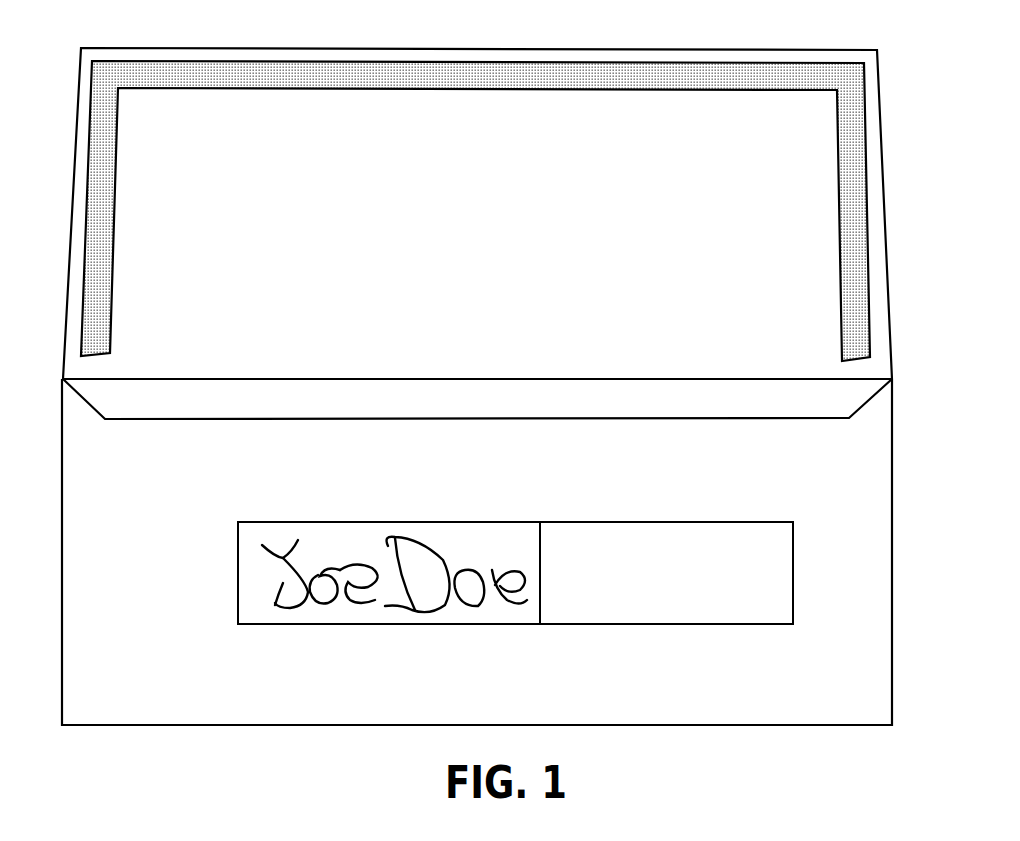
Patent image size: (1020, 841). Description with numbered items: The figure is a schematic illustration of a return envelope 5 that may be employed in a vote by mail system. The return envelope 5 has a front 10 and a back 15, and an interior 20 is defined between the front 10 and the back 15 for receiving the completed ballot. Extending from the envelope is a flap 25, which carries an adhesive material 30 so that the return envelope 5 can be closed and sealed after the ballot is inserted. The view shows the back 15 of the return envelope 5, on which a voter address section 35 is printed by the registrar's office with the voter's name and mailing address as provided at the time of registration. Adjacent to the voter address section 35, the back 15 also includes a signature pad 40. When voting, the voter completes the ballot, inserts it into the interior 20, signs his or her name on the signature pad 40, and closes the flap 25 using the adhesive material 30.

The return envelope 5 is at (477, 388).
The front 10 is at (847, 396).
The back 15 is at (778, 693).
The interior 20 is at (750, 418).
The flap 25 is at (280, 128).
The adhesive material 30 is at (848, 253).
The voter address section 35 is at (680, 542).
The signature pad 40 is at (355, 613).